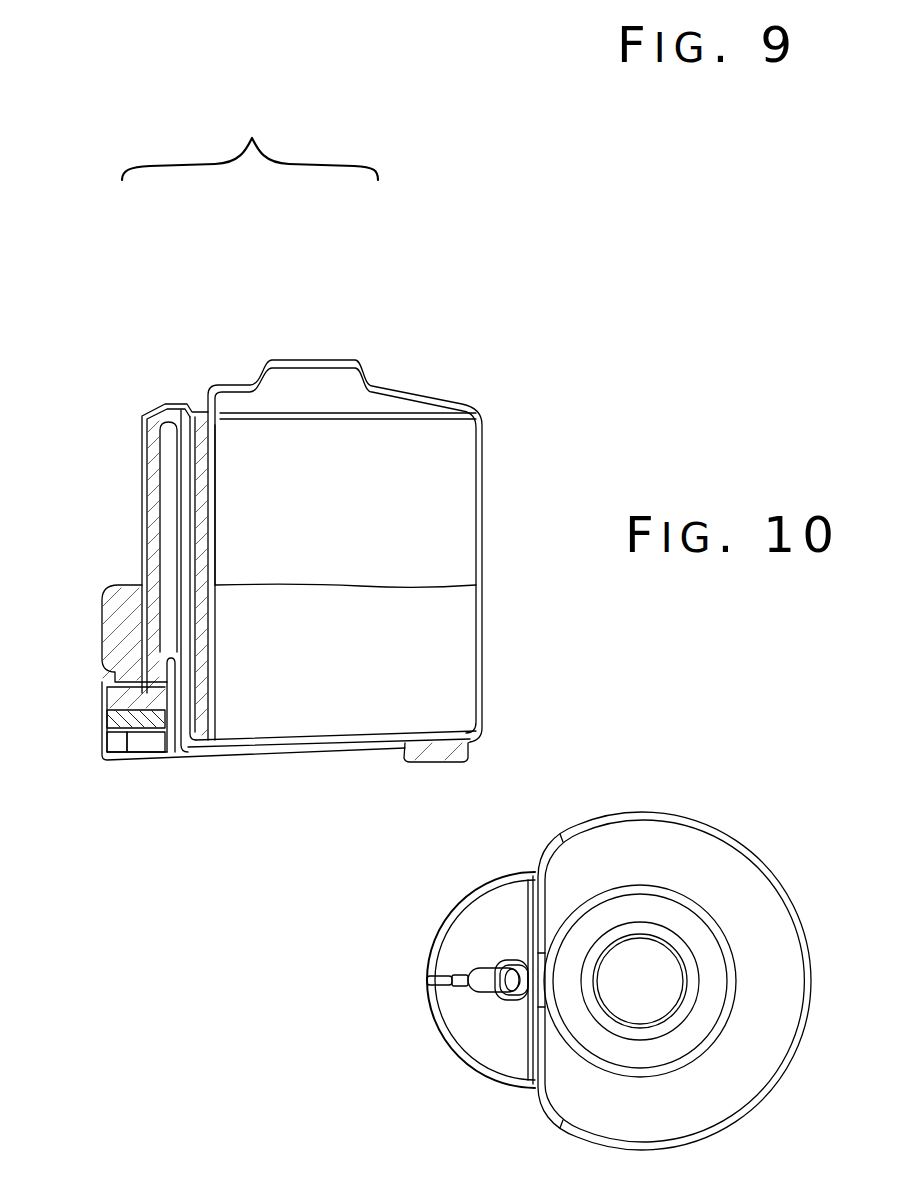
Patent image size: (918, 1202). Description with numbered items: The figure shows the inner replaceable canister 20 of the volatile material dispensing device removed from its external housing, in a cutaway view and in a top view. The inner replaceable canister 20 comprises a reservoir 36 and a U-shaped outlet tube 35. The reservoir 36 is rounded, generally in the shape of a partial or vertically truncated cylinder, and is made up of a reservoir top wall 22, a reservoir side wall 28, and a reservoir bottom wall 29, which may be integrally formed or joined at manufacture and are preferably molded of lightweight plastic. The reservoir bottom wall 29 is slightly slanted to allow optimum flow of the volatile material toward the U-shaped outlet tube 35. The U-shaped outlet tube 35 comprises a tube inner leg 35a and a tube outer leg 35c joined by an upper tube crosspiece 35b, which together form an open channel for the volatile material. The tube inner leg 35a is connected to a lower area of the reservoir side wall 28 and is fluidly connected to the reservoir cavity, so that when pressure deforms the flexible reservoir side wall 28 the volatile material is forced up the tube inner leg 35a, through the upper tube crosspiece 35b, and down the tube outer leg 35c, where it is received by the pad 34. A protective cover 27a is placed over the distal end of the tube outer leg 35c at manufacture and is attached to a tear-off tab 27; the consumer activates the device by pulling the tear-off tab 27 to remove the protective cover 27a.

In FIG. 9, the inner replaceable canister 20 is at (261, 109).
In FIG. 9, the reservoir top wall 22 is at (430, 392).
In FIG. 10, the reservoir top wall 22 is at (677, 868).
In FIG. 9, the tear-off tab 27 is at (120, 633).
In FIG. 9, the protective cover 27a is at (152, 692).
In FIG. 9, the reservoir side wall 28 is at (215, 555).
In FIG. 9, the reservoir bottom wall 29 is at (345, 737).
In FIG. 9, the pad 34 is at (123, 717).
In FIG. 10, the pad 34 is at (472, 937).
In FIG. 9, the U-shaped outlet tube 35 is at (170, 261).
In FIG. 9, the tube inner leg 35a is at (187, 467).
In FIG. 9, the upper tube crosspiece 35b is at (168, 418).
In FIG. 10, the upper tube crosspiece 35b is at (488, 985).
In FIG. 9, the tube outer leg 35c is at (155, 503).
In FIG. 9, the reservoir 36 is at (333, 279).
In FIG. 10, the reservoir 36 is at (665, 792).